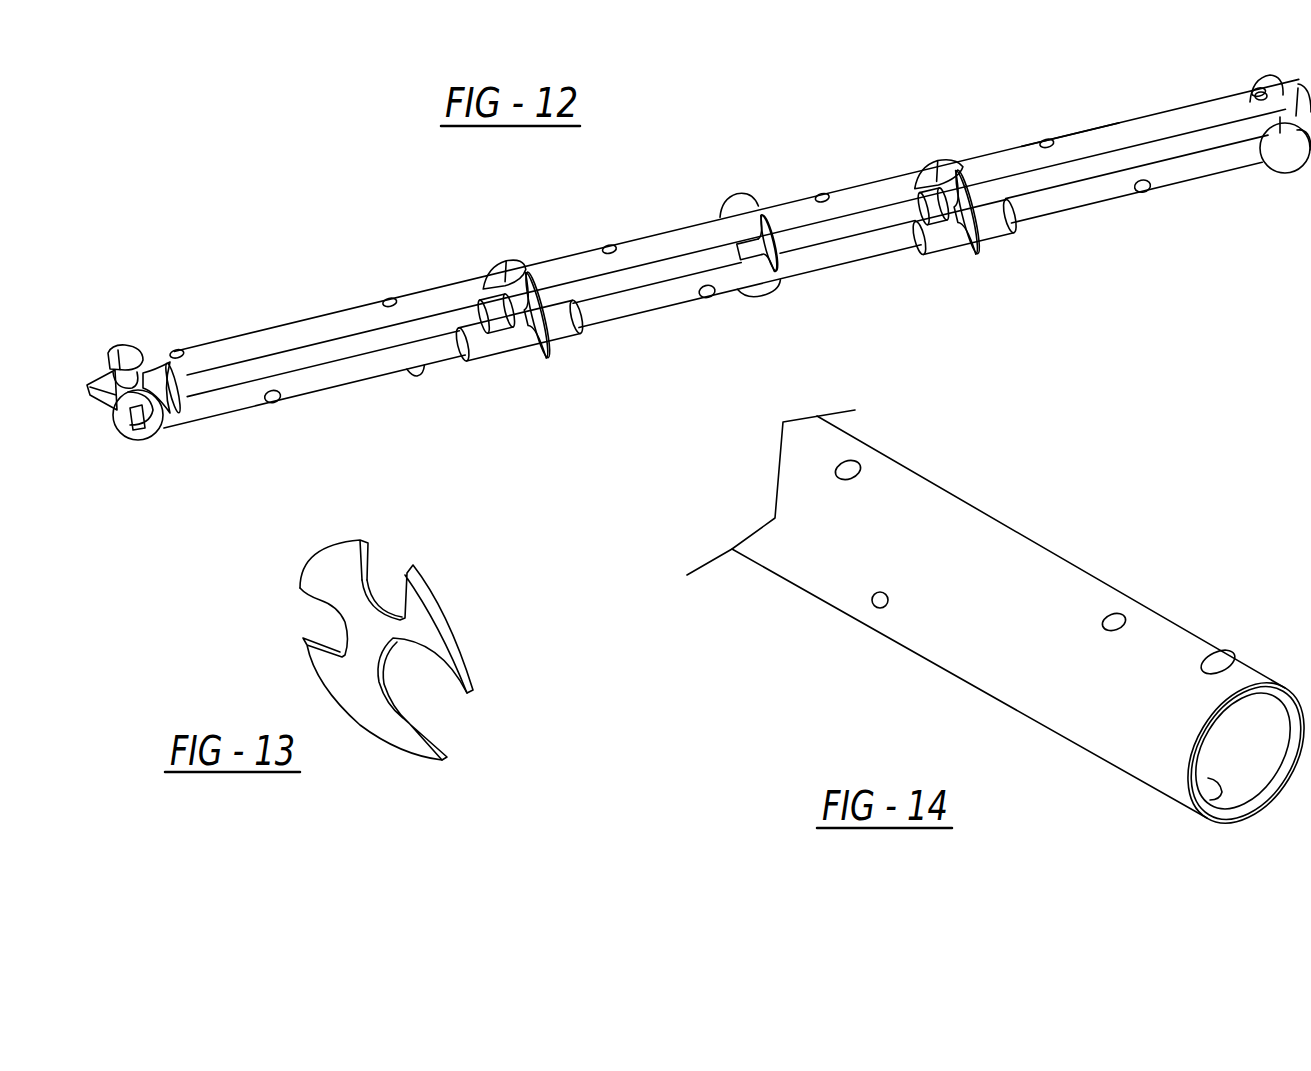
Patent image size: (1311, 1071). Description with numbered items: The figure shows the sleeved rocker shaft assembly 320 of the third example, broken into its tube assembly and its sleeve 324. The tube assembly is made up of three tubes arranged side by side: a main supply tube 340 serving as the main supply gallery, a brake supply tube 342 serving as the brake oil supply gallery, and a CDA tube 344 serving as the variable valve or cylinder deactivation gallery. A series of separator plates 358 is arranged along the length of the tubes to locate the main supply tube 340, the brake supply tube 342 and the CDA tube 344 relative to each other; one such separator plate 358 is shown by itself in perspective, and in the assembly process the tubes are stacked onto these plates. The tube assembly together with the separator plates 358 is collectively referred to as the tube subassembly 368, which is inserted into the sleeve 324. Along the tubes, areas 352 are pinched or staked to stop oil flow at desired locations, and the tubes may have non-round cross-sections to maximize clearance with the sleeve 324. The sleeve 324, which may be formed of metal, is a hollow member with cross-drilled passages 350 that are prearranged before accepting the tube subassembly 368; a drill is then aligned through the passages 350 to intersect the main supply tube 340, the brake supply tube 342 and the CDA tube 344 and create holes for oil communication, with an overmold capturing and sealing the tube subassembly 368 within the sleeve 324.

In FIG. 12, the rocker shaft assembly 320 is at (385, 188).
In FIG. 14, the sleeve 324 is at (1027, 560).
In FIG. 12, the main supply tube 340 is at (890, 185).
In FIG. 12, the brake supply tube 342 is at (367, 345).
In FIG. 12, the CDA tube 344 is at (415, 358).
In FIG. 14, the passages 350 is at (880, 600).
In FIG. 12, the areas 352 is at (503, 282).
In FIG. 12, the separator plates 358 is at (125, 347).
In FIG. 13, the separator plates 358 is at (428, 623).
In FIG. 12, the tube subassembly 368 is at (1062, 97).